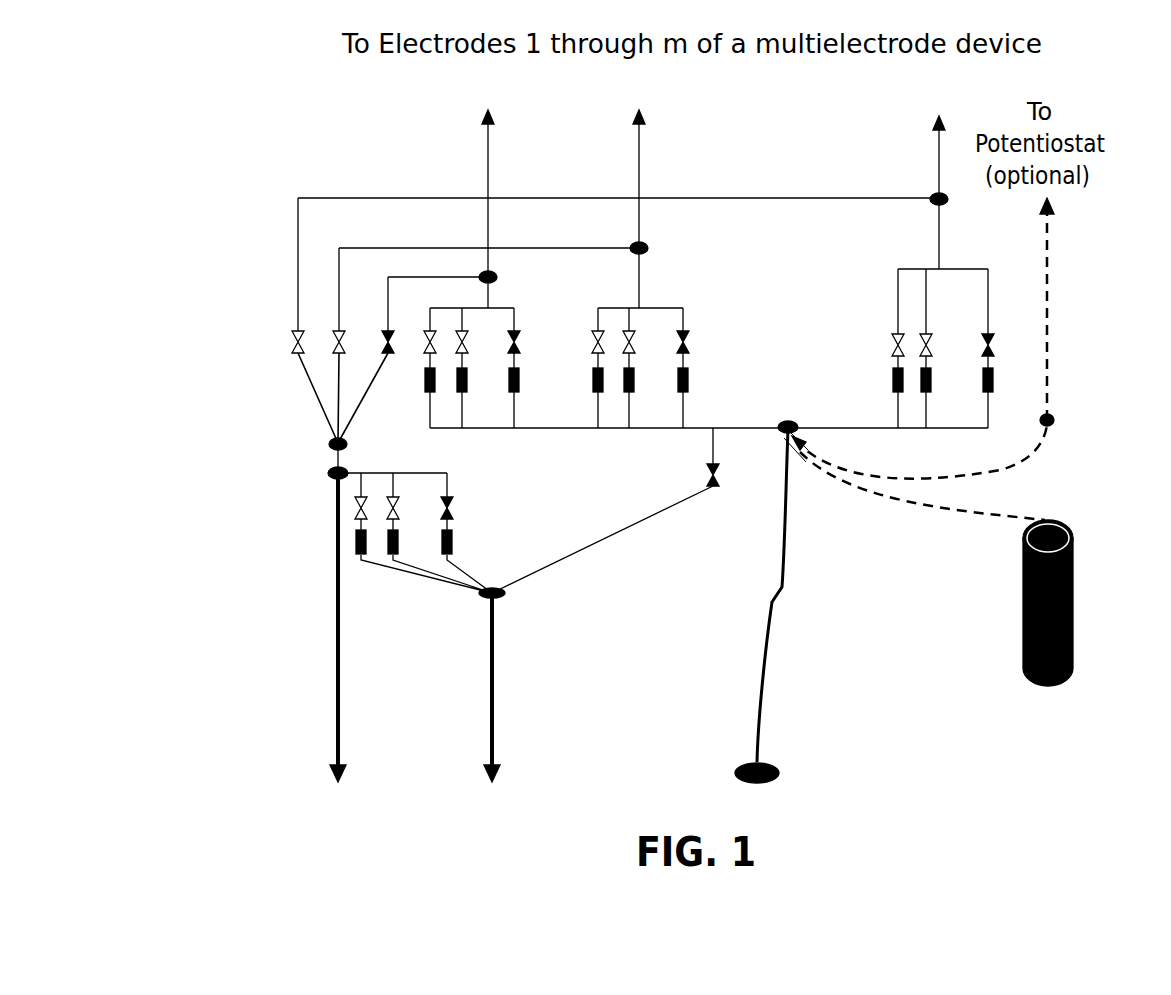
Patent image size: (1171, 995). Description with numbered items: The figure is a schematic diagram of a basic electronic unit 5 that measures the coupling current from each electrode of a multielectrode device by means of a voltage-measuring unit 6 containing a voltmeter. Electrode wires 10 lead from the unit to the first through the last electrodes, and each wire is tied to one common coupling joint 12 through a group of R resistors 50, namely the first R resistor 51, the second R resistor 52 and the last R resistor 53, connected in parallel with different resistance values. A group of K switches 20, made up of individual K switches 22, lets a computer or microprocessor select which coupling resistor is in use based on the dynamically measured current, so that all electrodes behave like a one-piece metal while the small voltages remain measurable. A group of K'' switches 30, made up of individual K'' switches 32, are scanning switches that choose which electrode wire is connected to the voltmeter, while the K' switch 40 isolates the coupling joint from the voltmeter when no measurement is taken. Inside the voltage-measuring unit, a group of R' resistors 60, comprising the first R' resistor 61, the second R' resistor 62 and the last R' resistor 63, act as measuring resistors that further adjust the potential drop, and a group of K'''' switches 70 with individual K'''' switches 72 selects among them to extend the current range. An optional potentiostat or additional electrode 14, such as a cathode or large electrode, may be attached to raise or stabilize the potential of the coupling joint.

The basic electronic unit 5 is at (252, 220).
The voltage-measuring unit 6 is at (268, 556).
The electrode wires 10 is at (492, 170).
The coupling joint 12 is at (782, 433).
The additional electrode 14 is at (1080, 607).
The group of K switches 20 is at (530, 325).
The K switches 22 is at (895, 325).
The group of K'' switches 30 is at (303, 361).
The K'' switches 32 is at (285, 358).
The K' switch 40 is at (717, 496).
The group of R resistors 50 is at (756, 396).
The R resistor #1 51 is at (428, 394).
The R resistor #2 52 is at (466, 394).
The R resistor #j 53 is at (518, 394).
The group of R' resistors 60 is at (451, 557).
The R' resistor #1 61 is at (361, 556).
The R' resistor #2 62 is at (393, 560).
The R' resistor #k 63 is at (450, 562).
The group of K'''' switches 70 is at (439, 483).
The K'''' switches 72 is at (363, 490).